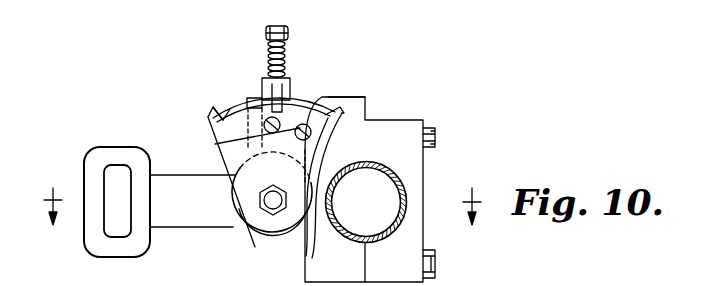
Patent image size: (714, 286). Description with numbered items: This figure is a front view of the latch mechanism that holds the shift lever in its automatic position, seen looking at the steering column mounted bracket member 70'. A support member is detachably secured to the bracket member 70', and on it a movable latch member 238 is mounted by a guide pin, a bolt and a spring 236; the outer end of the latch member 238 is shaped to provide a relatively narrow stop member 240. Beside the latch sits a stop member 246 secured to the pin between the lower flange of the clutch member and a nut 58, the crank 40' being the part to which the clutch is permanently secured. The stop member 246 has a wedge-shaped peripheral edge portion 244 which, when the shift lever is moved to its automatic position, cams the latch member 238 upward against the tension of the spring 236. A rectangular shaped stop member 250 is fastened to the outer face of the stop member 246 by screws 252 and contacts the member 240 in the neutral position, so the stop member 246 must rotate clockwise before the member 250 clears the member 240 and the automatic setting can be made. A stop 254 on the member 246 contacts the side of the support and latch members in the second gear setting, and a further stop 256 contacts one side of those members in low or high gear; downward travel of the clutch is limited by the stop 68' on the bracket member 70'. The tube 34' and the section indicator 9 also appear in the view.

The spring 236 is at (289, 46).
The movable latch member 238 is at (266, 78).
The stop member 240 is at (290, 97).
The wedge-shaped peripheral edge portion 244 is at (236, 112).
The stop 254 is at (212, 113).
The stop member 246 is at (212, 131).
The screws 252 is at (215, 144).
The rectangular shaped stop member 250 is at (335, 97).
The stop 256 is at (345, 113).
The bracket member 70' is at (383, 189).
The tube 34' is at (395, 199).
The crank 40' is at (159, 204).
The disc 58 is at (265, 216).
The stop 68' is at (303, 190).
The section line 9- 9 is at (262, 220).